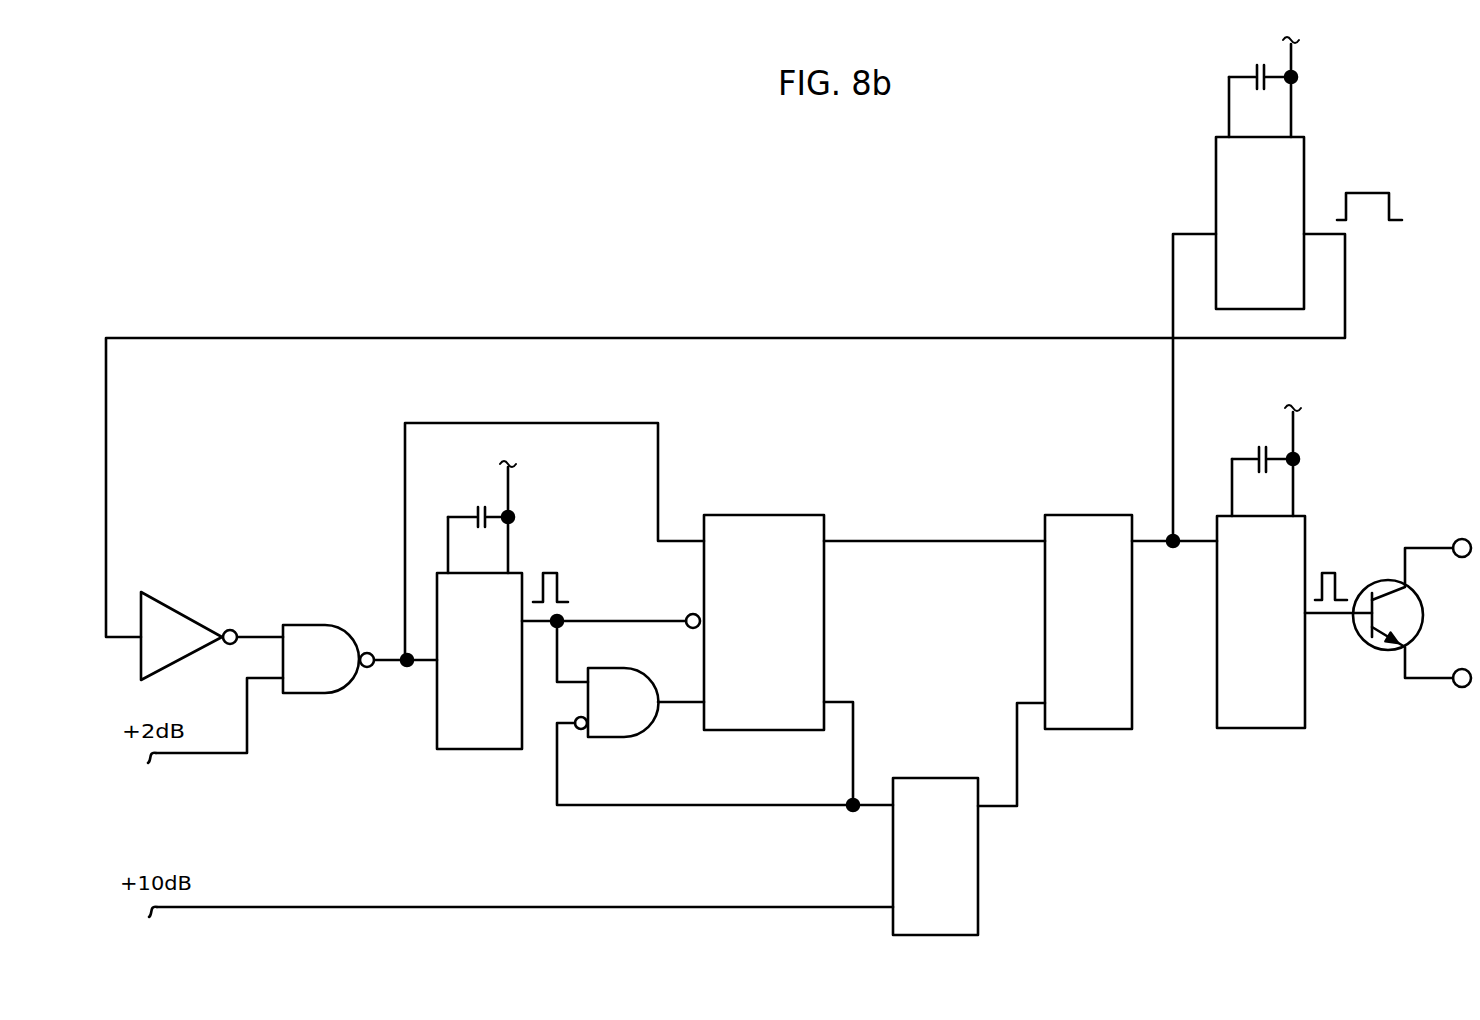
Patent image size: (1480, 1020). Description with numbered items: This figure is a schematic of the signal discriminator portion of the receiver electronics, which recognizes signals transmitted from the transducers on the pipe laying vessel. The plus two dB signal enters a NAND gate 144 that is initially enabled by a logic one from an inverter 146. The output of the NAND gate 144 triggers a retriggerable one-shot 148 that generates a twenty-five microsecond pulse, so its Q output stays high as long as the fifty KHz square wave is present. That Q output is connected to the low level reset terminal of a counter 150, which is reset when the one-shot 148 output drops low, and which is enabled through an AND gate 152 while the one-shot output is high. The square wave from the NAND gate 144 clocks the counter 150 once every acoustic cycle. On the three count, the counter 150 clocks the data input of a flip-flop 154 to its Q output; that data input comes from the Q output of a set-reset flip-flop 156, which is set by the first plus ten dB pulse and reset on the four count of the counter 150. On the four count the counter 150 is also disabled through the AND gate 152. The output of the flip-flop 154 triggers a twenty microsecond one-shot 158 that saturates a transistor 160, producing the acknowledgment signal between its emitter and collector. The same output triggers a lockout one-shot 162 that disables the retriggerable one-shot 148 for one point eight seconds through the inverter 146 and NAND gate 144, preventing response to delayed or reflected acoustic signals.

The NAND gate 144 is at (308, 697).
The inverter 146 is at (200, 622).
The retriggerable one-shot 148 is at (465, 749).
The counter 150 is at (737, 730).
The AND gate 152 is at (608, 737).
The flip-flop 154 is at (1092, 729).
The set-reset flip-flop 156 is at (978, 885).
The 20 microsecond one-shot 158 is at (1257, 728).
The transistor 160 is at (1387, 579).
The lockout one-shot 162 is at (1304, 185).